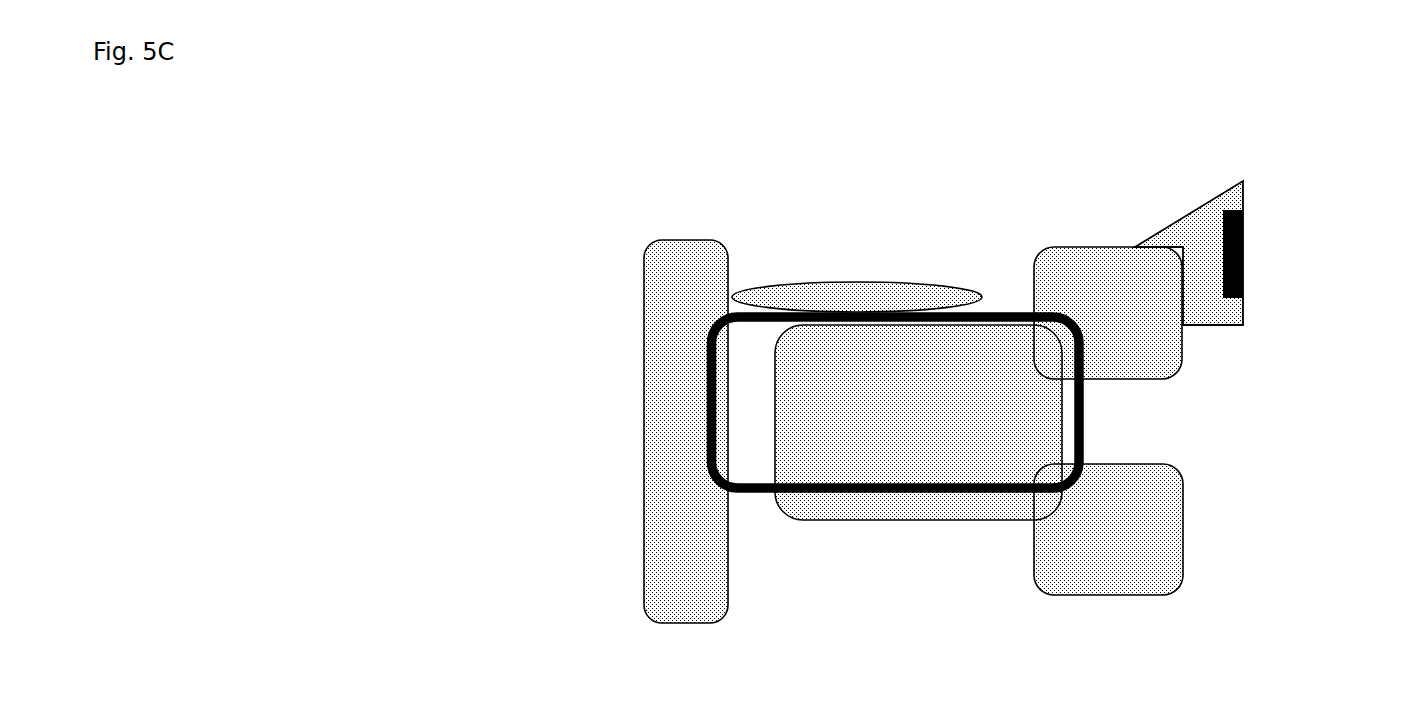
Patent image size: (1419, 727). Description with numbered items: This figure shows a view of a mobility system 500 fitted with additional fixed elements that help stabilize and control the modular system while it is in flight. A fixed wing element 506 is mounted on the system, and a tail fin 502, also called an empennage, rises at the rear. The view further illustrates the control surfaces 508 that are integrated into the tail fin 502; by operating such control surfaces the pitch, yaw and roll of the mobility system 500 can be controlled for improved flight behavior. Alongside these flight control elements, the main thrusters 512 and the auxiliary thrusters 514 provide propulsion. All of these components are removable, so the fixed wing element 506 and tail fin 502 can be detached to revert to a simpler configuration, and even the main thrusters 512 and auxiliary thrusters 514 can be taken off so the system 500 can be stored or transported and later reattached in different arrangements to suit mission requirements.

The mobility system 500 is at (758, 390).
The tail fin 502 is at (1183, 208).
The fixed wing element 506 is at (857, 285).
The control surfaces 508 is at (1245, 253).
The main thrusters 512 is at (652, 535).
The auxiliary thrusters 514 is at (1108, 597).